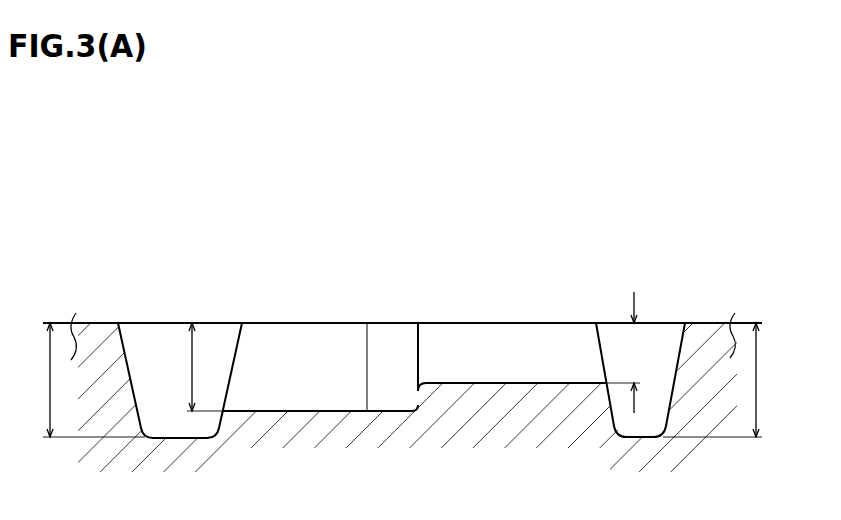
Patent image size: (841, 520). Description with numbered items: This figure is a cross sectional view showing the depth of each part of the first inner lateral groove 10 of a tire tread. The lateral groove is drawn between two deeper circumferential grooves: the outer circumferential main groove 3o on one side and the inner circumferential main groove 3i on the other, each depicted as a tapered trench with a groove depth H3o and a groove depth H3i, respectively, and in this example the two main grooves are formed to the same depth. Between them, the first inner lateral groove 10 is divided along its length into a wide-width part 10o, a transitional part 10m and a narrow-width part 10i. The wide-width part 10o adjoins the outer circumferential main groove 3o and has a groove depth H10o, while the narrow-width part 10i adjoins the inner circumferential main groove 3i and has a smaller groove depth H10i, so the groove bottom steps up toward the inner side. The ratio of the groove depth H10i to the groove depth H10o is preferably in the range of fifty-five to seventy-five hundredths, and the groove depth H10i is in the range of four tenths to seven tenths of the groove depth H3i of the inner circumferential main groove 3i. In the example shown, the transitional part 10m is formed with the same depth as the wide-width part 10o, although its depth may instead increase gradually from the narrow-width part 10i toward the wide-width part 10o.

The outer circumferential main groove 3o is at (148, 352).
The inner circumferential main groove 3i is at (672, 353).
The first inner lateral groove 10 is at (495, 240).
The wide-width part 10o is at (310, 350).
The transitional part 10m is at (392, 350).
The narrow-width part 10i is at (472, 350).
The groove depth of the outer circumferential main groove H3o is at (86, 380).
The groove depth of the wide-width part H10o is at (192, 367).
The groove depth of the narrow-width part H10i is at (634, 352).
The groove depth of the inner circumferential main groove H3i is at (719, 380).